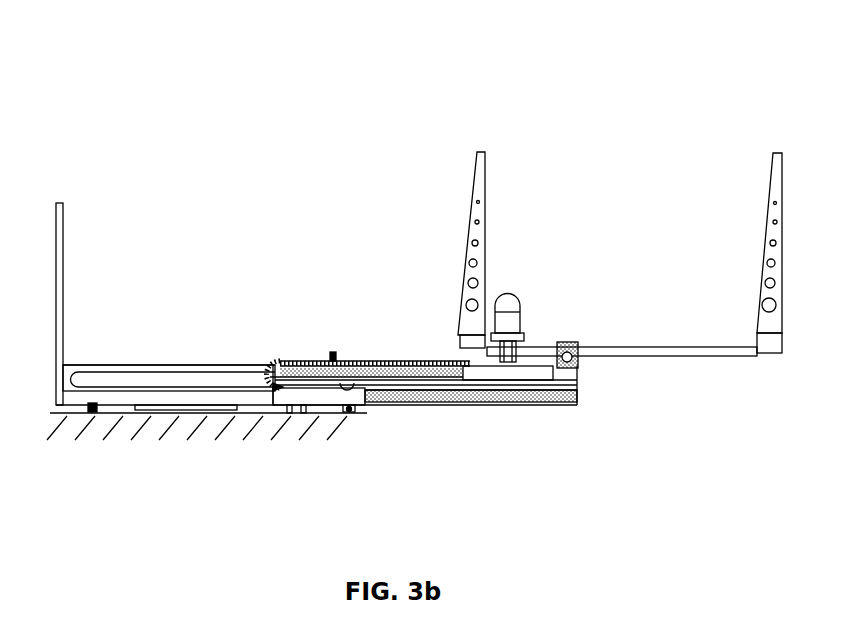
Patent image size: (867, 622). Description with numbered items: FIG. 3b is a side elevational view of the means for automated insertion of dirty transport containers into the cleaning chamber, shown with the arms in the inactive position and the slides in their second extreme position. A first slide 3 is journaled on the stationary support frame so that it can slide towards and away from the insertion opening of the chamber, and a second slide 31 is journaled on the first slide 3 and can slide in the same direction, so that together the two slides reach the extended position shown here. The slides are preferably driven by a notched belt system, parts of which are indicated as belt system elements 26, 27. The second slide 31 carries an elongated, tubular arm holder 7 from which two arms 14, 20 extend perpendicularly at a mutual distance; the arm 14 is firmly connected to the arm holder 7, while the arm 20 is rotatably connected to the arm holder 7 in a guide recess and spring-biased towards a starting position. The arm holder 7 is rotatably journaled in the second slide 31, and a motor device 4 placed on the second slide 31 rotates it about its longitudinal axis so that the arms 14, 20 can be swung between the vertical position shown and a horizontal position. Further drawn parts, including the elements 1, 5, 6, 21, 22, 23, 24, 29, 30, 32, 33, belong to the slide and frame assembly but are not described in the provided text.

The base frame 1 is at (92, 406).
The first slide 3 is at (502, 402).
The motor device 4 is at (507, 308).
The toothed rack 5 is at (310, 357).
The bearing block 6 is at (578, 368).
The arm holder 7 is at (636, 352).
The arm 14 is at (774, 232).
The arm 20 is at (370, 363).
The support post 21 is at (474, 232).
The base plate 22 is at (175, 406).
The stop 23 is at (277, 387).
The guide rail 24 is at (73, 380).
The notched belt system 26 is at (197, 373).
The notched belt system 27 is at (452, 387).
The side wall 29 is at (61, 257).
The slide 30 is at (143, 398).
The second slide 31 is at (528, 380).
The bracket 32 is at (349, 412).
The bearing 33 is at (317, 387).